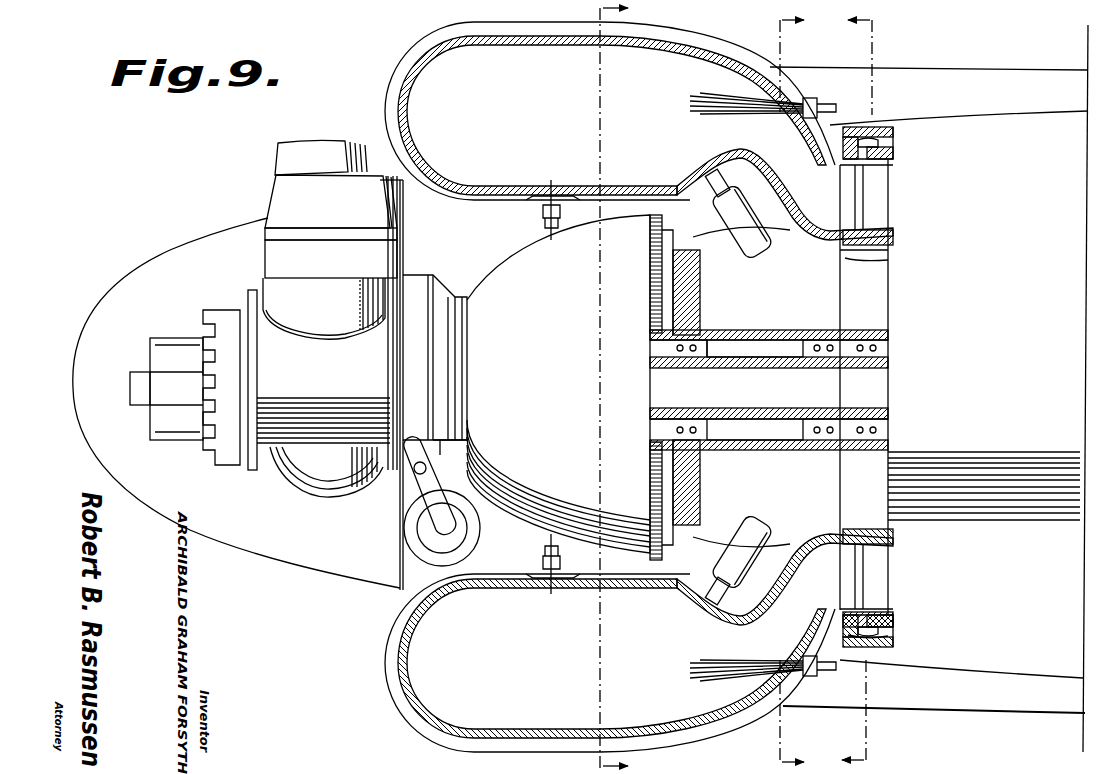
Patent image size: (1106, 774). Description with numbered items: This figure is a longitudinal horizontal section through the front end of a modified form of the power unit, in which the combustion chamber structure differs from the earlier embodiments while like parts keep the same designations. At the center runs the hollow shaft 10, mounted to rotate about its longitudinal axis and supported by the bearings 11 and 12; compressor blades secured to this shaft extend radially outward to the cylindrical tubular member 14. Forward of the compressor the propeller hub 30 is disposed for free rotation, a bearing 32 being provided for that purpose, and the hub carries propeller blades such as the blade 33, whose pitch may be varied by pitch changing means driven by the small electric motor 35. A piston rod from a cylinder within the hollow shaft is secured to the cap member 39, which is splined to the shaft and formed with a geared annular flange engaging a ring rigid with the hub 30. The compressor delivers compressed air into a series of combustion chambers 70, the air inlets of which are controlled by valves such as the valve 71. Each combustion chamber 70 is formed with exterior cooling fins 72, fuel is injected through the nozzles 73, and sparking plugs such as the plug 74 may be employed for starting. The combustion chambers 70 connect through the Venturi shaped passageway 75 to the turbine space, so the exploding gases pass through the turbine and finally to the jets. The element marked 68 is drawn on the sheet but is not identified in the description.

The central longitudinal hollow shaft 10 is at (914, 381).
The bearing 11 is at (770, 391).
The bearing 12 is at (878, 391).
The cylindrical tubular member 14 is at (882, 252).
The propeller hub 30 is at (272, 262).
The bearing 32 is at (437, 342).
The propeller blade 33 is at (298, 160).
The small electric motor 35 is at (405, 550).
The cap member 39 is at (180, 420).
The bearing retainer 68 is at (882, 640).
The combustion chamber 70 is at (665, 65).
The valve 71 is at (700, 158).
The exterior cooling fins 72 is at (478, 733).
The fuel nozzle 73 is at (814, 104).
The sparking plug 74 is at (541, 553).
The Venturi shaped passageway 75 is at (832, 191).